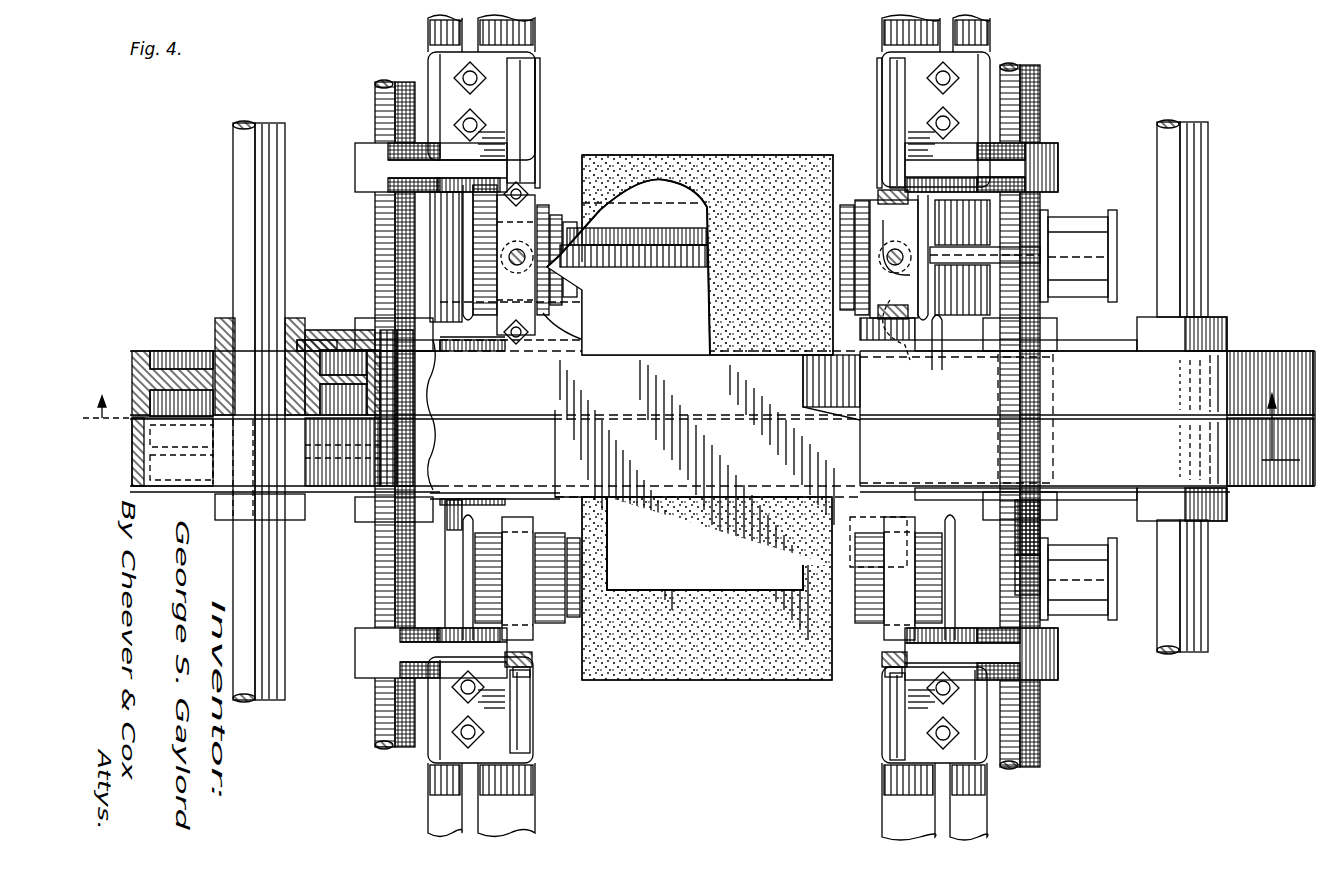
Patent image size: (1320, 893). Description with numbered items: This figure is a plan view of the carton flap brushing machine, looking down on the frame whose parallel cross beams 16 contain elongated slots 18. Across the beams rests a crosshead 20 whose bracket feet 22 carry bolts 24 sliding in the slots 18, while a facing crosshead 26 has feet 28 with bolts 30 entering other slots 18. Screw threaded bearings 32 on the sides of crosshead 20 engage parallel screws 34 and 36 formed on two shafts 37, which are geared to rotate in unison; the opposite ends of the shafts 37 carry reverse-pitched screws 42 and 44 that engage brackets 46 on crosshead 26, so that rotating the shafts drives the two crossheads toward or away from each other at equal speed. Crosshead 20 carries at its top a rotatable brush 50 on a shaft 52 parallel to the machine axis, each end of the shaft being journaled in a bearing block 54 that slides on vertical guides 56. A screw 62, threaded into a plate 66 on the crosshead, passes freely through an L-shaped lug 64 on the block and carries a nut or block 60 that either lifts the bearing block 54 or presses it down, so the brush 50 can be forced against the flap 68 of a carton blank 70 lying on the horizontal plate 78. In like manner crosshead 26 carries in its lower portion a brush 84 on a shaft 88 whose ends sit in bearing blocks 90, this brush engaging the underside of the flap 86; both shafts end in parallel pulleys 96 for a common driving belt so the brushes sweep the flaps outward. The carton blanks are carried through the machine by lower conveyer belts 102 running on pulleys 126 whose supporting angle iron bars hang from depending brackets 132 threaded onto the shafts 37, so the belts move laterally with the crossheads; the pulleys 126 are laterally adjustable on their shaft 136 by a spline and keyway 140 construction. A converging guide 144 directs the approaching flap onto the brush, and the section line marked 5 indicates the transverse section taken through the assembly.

The section line 5- 5 is at (691, 432).
The cross beams 16 is at (520, 30).
The elongated slots 18 is at (470, 33).
The crosshead 20 is at (480, 162).
The bracket feet 22 is at (500, 107).
The bolts 24 is at (480, 80).
The crosshead 26 is at (532, 665).
The feet 28 is at (445, 765).
The bolts 30 is at (960, 700).
The screw threaded bearings 32 is at (372, 165).
The screw 34 is at (1040, 95).
The screw 36 is at (378, 95).
The shafts 37 is at (383, 82).
The screw 42 is at (390, 695).
The screw 44 is at (1040, 722).
The brackets 46 is at (368, 650).
The brush 50 is at (745, 165).
The shaft 52 is at (1020, 250).
The bearing block 54 is at (717, 402).
The vertical guides 56 is at (870, 210).
The nut or block 60 is at (885, 300).
The screw 62 is at (525, 262).
The L-shaped lug 64 is at (515, 258).
The plate 66 is at (505, 290).
The flap 68 is at (665, 258).
The carton blank 70 is at (745, 385).
The horizontal plate 78 is at (648, 215).
The brush 84 is at (770, 670).
The flap 86 is at (700, 590).
The shaft 88 is at (1035, 578).
The bearing blocks 90 is at (533, 638).
The pulleys 96 is at (1095, 230).
The lower conveyer belts 102 is at (722, 399).
The pulleys 126 is at (168, 352).
The depending brackets 132 is at (365, 330).
The shaft 136 is at (240, 240).
The keyway 140 is at (258, 202).
The converging guide 144 is at (985, 550).